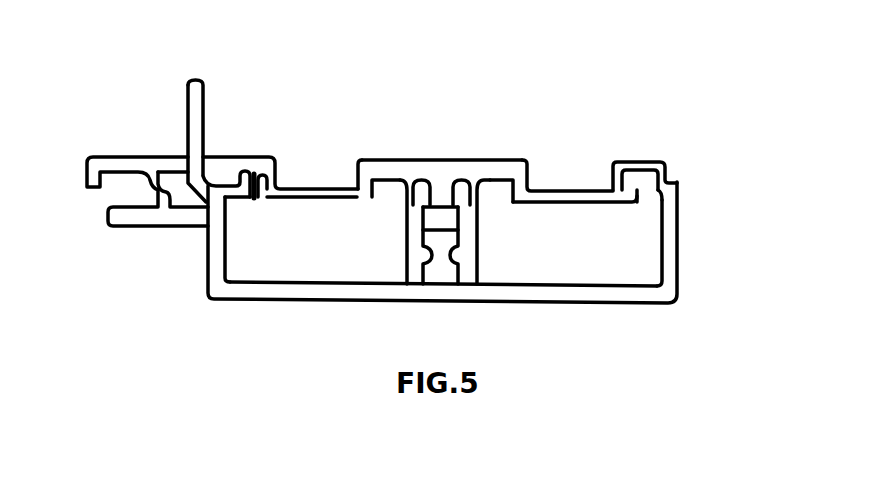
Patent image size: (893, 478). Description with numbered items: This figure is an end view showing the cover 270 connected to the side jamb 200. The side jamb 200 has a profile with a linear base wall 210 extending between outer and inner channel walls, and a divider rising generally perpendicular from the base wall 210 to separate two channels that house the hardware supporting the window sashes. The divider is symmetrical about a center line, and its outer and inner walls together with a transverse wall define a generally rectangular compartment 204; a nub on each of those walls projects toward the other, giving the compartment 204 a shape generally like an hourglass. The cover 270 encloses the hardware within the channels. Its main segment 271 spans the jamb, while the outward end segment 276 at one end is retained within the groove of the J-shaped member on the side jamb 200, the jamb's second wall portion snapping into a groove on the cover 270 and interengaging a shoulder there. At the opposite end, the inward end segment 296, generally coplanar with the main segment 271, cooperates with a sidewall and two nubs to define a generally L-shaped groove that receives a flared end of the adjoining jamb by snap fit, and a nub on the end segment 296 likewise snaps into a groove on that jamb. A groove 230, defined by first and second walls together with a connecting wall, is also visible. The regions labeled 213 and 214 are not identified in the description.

The side jamb 200 is at (559, 308).
The compartment 204 is at (448, 232).
The base wall 210 is at (394, 298).
The left chamber 213 is at (305, 258).
The right chamber 214 is at (650, 268).
The groove 230 is at (115, 192).
The cover 270 is at (393, 160).
The main segment 271 is at (483, 161).
The outward end segment 276 is at (238, 162).
The inward end segment 296 is at (635, 162).